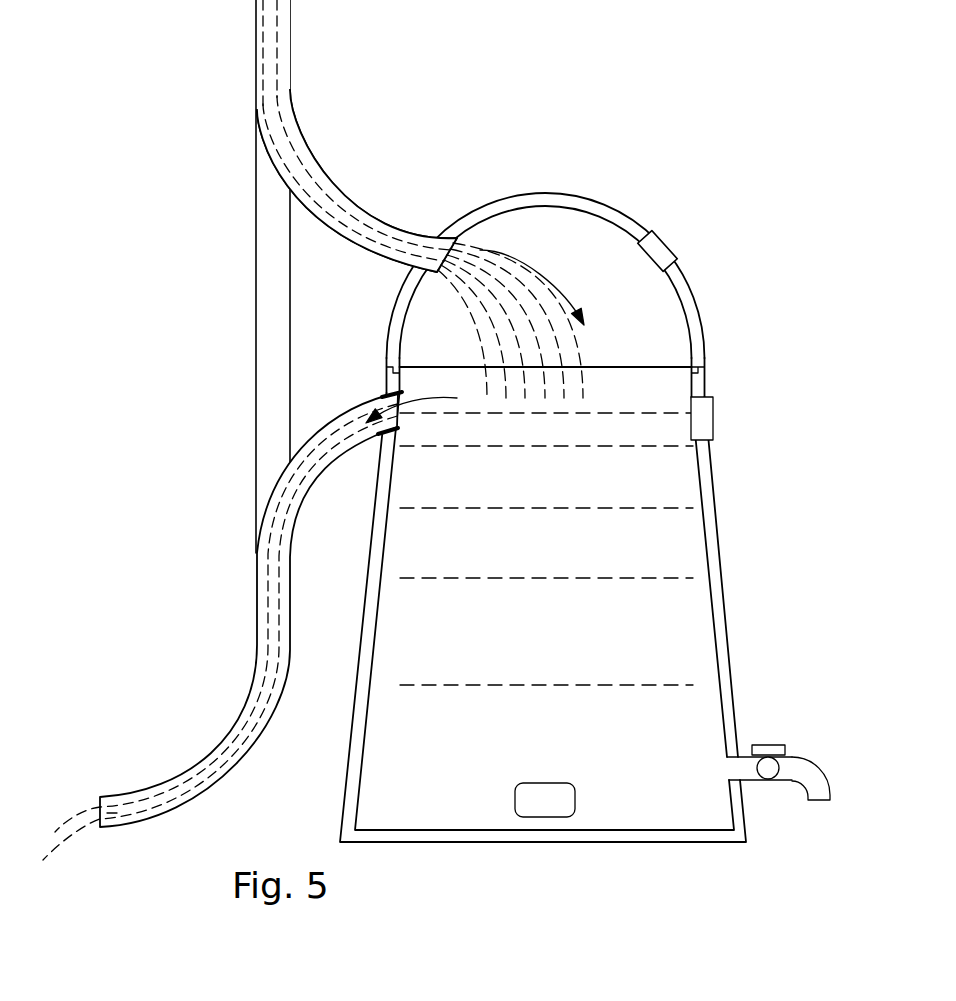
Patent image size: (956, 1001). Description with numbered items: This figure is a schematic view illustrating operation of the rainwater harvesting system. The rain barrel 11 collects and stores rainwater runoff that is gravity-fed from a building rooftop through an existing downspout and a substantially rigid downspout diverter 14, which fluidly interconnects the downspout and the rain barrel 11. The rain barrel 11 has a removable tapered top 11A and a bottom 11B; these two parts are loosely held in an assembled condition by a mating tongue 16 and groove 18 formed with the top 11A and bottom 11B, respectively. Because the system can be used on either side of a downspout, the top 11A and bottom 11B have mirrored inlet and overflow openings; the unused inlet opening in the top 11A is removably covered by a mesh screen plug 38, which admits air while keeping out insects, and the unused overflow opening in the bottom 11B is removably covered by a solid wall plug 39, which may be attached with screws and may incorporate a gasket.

The rain barrel 11 is at (698, 215).
The removable tapered top 11A is at (530, 192).
The bottom 11B is at (728, 522).
The downspout diverter 14 is at (227, 305).
The tongue 16 is at (702, 368).
The groove 18 is at (393, 372).
The mesh screen plug 38 is at (678, 250).
The solid wall plug 39 is at (717, 427).